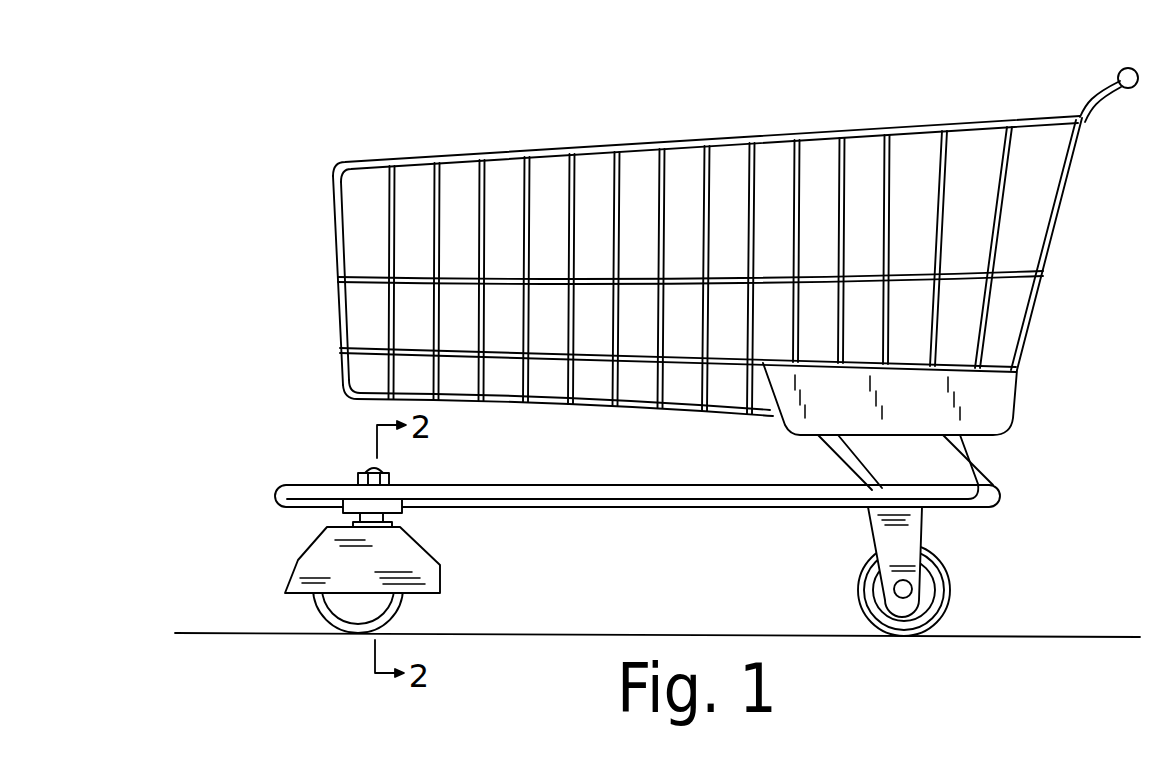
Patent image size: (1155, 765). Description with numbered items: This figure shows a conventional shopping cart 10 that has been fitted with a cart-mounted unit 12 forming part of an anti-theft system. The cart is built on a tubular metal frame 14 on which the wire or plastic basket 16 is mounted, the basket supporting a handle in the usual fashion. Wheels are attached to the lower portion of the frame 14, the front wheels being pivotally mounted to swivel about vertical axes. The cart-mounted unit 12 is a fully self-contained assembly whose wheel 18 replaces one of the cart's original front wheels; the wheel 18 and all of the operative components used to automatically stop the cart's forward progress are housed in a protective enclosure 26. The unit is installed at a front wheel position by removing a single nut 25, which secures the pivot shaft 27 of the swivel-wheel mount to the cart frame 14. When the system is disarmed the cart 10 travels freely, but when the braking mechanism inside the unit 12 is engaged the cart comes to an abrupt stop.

The shopping cart 10 is at (695, 141).
The cart-mounted unit 12 is at (295, 563).
The tubular metal frame 14 is at (980, 458).
The basket 16 is at (337, 293).
The wheel 18 is at (400, 607).
The nut 25 is at (393, 477).
The protective enclosure 26 is at (447, 578).
The pivot shaft 27 is at (393, 517).